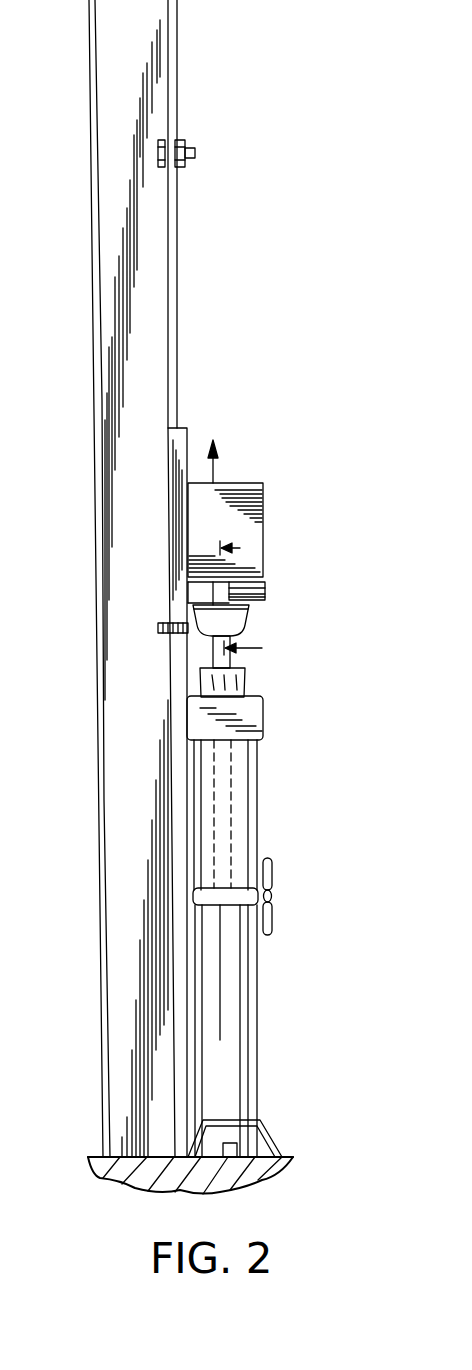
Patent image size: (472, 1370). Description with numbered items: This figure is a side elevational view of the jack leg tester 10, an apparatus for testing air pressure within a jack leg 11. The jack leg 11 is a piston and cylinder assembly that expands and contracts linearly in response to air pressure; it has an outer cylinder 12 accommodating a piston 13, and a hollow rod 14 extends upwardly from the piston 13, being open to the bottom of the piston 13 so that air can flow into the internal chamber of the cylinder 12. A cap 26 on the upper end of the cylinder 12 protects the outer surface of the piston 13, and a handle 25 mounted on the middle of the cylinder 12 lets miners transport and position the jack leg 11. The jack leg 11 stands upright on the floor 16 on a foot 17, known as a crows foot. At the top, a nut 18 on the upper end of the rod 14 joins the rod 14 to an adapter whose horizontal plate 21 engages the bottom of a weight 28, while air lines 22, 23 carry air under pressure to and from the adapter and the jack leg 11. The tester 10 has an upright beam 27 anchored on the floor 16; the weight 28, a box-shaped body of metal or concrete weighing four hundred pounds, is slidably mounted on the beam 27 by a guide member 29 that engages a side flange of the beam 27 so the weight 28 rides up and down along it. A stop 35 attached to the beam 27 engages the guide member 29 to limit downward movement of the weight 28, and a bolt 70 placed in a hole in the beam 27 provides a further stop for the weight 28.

The jack leg tester 10 is at (220, 210).
The jack leg 11 is at (263, 786).
The cylinder 12 is at (242, 1012).
The piston 13 is at (247, 687).
The rod 14 is at (231, 657).
The floor 16 is at (122, 1155).
The foot 17 is at (278, 1126).
The nut 18 is at (258, 618).
The plate 21 is at (265, 578).
The air line 22 is at (268, 585).
The air line 23 is at (268, 596).
The handle 25 is at (271, 918).
The cap 26 is at (265, 718).
The beam 27 is at (108, 347).
The weight 28 is at (237, 505).
The guide member 29 is at (193, 432).
The stop 35 is at (158, 628).
The bolt 70 is at (188, 148).